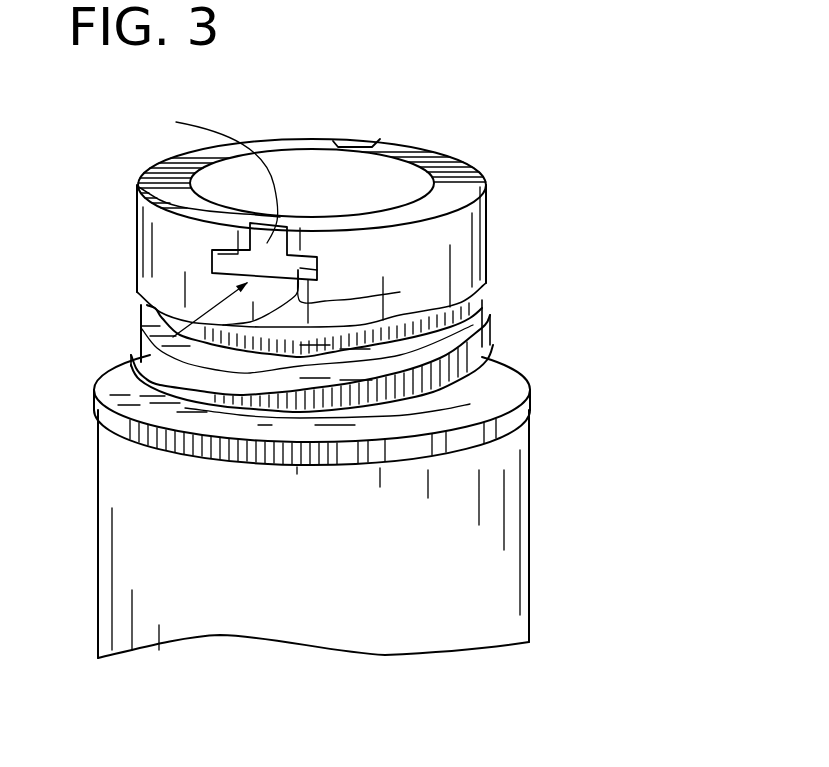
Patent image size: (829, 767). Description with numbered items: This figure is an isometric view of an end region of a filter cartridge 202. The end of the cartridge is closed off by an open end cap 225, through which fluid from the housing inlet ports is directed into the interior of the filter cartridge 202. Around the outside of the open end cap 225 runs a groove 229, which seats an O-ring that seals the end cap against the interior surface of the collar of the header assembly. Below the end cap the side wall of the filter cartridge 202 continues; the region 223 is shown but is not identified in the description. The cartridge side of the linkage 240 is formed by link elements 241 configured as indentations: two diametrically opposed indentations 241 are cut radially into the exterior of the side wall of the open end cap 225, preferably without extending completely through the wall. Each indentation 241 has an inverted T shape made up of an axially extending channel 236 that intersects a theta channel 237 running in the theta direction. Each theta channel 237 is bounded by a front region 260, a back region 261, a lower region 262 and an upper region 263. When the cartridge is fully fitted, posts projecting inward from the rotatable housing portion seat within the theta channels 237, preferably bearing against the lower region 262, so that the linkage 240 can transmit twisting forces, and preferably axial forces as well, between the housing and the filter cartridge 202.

The filter cartridge 202 is at (532, 453).
The skirt 223 is at (505, 565).
The open end cap 225 is at (490, 355).
The groove 229 is at (473, 318).
The axially extending channel 236 is at (372, 143).
The theta channel 237 is at (137, 187).
The linkage 240 is at (141, 341).
The link elements (indentations) 241 is at (350, 140).
The front region 260 is at (440, 283).
The back region 261 is at (230, 233).
The lower region 262 is at (140, 390).
The upper region 263 is at (300, 216).